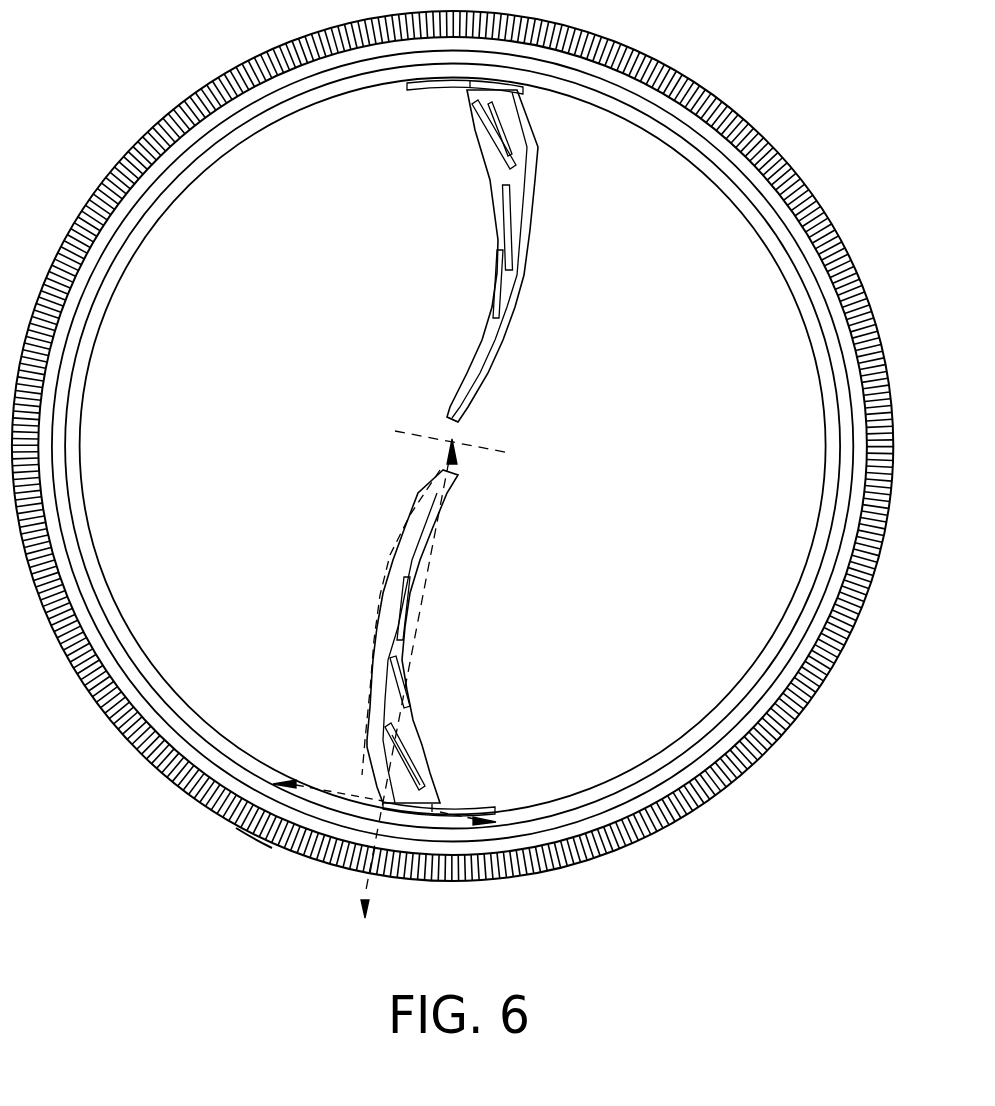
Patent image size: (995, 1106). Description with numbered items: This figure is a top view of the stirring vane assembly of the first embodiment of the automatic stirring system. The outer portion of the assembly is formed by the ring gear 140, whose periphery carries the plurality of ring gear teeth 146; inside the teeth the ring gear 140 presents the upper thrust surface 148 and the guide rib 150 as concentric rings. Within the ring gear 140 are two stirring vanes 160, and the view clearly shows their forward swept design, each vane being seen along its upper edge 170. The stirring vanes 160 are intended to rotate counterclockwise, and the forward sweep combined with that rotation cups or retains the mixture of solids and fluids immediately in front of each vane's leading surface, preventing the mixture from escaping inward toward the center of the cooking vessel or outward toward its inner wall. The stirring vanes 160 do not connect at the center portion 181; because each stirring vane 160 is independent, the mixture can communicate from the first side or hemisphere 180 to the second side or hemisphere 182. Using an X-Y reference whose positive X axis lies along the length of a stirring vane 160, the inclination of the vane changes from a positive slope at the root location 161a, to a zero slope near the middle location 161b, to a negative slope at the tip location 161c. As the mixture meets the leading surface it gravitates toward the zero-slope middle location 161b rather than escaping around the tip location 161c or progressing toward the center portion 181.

The ring gear 140 is at (215, 763).
The ring gear teeth 146 is at (255, 835).
The upper thrust surface 148 is at (94, 568).
The guide rib 150 is at (61, 510).
The stirring vane 160 is at (437, 448).
The root location 161a is at (527, 108).
The middle location 161b is at (512, 300).
The tip location 161c is at (470, 410).
The upper edge 170 is at (525, 240).
The first side or hemisphere 180 is at (246, 422).
The center portion 181 is at (455, 443).
The second side or hemisphere 182 is at (668, 422).